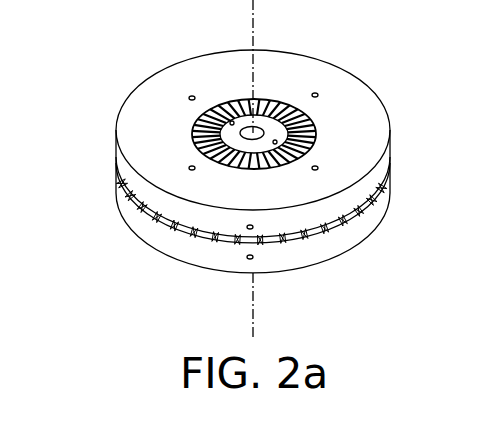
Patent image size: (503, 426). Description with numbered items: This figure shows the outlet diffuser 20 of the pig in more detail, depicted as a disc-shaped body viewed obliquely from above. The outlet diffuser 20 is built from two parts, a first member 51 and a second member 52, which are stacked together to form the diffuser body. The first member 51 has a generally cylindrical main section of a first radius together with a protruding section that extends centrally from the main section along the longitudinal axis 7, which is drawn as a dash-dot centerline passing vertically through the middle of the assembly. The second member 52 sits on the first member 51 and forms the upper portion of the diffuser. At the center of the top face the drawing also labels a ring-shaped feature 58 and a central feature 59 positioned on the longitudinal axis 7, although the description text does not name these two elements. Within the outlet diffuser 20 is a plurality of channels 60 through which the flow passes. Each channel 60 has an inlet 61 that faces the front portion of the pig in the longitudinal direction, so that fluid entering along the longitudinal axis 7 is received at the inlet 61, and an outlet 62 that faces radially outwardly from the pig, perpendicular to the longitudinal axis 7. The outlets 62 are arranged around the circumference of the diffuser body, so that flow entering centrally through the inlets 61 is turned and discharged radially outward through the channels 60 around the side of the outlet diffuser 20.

The outlet diffuser 20 is at (117, 88).
The first member 51 is at (372, 239).
The second member 52 is at (362, 106).
The stator with windings 58 is at (295, 88).
The central hub bearing 59 is at (243, 118).
The channel 60 is at (275, 245).
The inlet 61 is at (128, 160).
The outlet 62 is at (198, 236).
The longitudinal axis 7 is at (252, 300).